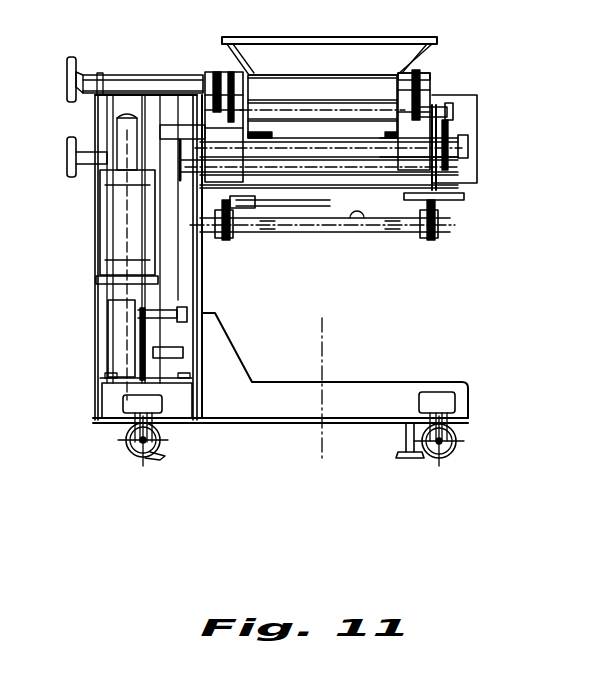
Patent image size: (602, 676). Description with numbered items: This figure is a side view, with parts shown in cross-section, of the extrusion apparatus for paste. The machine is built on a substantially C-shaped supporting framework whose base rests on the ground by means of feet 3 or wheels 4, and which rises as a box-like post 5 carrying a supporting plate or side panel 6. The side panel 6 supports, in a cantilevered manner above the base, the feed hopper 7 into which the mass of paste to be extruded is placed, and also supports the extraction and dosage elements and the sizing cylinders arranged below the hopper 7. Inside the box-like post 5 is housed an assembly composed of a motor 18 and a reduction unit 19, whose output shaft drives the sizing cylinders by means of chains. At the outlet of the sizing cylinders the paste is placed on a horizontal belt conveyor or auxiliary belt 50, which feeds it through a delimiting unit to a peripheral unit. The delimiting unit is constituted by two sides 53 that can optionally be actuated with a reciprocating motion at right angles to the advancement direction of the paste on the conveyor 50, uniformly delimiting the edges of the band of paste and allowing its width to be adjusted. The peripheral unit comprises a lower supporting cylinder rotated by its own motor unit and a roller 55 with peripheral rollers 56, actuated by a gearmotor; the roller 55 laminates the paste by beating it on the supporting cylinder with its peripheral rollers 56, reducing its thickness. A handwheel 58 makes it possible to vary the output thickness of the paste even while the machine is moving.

The feet 3 is at (404, 452).
The wheels 4 is at (130, 455).
The box-like post 5 is at (96, 310).
The side panel 6 is at (203, 296).
The feed hopper 7 is at (418, 54).
The motor 18 is at (112, 222).
The reduction unit 19 is at (108, 365).
The auxiliary belt 50 is at (358, 220).
The sides 53 is at (253, 208).
The roller 55 is at (432, 180).
The peripheral rollers 56 is at (328, 188).
The handwheel 58 is at (72, 172).